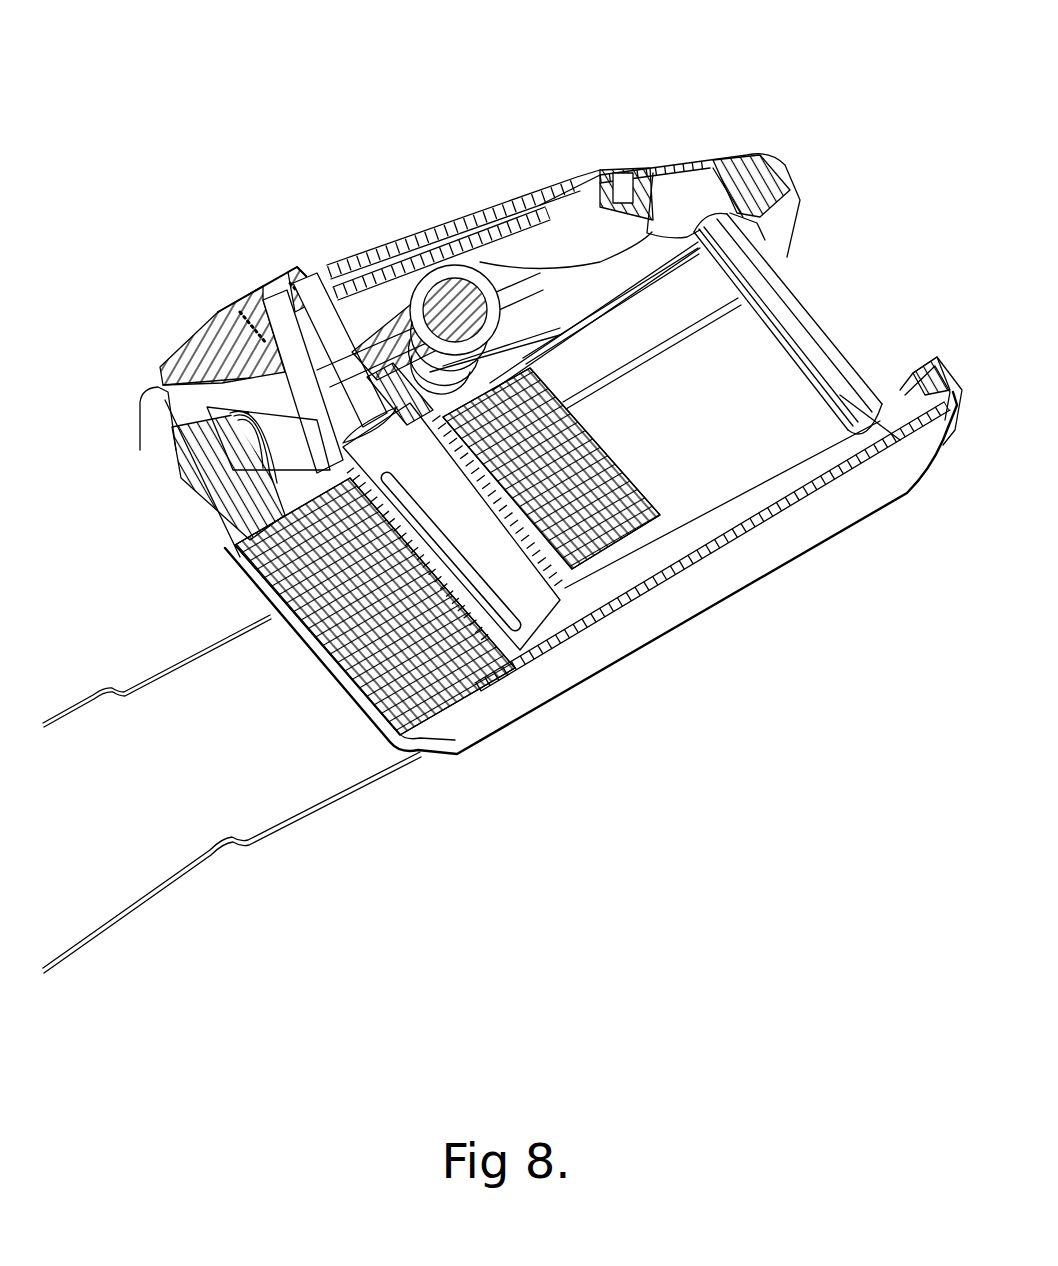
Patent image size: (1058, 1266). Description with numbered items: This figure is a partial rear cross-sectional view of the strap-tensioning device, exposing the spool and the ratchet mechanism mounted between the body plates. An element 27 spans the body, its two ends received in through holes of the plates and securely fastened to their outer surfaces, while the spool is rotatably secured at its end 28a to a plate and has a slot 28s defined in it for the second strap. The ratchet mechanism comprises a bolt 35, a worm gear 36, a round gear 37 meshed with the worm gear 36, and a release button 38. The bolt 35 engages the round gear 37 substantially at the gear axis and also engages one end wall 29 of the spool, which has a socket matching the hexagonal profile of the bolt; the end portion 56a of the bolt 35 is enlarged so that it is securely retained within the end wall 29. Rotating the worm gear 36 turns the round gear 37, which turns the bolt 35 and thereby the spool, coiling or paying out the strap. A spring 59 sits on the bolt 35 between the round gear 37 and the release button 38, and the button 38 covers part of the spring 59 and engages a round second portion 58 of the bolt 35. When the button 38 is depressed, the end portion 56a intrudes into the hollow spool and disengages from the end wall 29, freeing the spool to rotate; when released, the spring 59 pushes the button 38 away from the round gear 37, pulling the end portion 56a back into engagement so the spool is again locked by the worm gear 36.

The element 27 is at (800, 307).
The end of the spool 28a is at (556, 604).
The slot 28s is at (430, 525).
The end wall 29 is at (330, 420).
The bolt 35 is at (317, 368).
The worm gear 36 is at (457, 295).
The round gear 37 is at (399, 335).
The release button 38 is at (245, 307).
The end portion of the bolt 56a is at (363, 433).
The round second portion 58 is at (274, 310).
The spring 59 is at (280, 352).